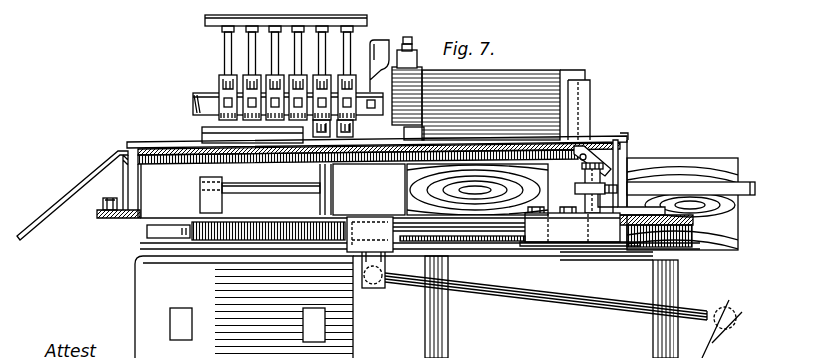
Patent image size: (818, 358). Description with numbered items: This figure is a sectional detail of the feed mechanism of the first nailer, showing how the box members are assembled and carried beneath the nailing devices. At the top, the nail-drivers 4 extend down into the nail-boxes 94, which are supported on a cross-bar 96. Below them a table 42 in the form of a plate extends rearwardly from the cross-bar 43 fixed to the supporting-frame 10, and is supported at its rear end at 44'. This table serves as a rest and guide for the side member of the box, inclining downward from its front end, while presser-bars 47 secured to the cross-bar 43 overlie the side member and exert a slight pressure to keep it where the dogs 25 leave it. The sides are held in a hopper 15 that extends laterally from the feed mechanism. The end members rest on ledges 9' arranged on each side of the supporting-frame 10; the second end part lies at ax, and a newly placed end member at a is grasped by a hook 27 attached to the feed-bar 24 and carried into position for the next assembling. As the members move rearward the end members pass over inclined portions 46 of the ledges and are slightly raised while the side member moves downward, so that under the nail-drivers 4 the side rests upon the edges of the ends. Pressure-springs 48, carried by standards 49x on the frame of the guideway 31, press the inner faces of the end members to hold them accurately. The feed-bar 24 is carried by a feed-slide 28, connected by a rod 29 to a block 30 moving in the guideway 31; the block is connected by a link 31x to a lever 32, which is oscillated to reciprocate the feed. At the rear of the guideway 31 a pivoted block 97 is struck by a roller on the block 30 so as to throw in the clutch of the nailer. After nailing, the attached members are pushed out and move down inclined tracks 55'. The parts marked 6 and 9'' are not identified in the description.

The nail-drivers 4 is at (230, 50).
The nail-boxes 94 is at (220, 88).
The cross-bar 96 is at (205, 96).
The table 42 is at (178, 148).
The hopper 15 is at (506, 105).
The presser-bars 47 is at (462, 140).
The hatched strip 6 is at (508, 140).
The rear end support 44' is at (356, 170).
The dogs 25 is at (598, 147).
The end member a is at (683, 163).
The hook 27 is at (752, 187).
The cross-bar 43 is at (628, 143).
The feed-bar 24 is at (582, 205).
The feed-slide 28 is at (580, 226).
The end part ax is at (477, 189).
The guideway 31 is at (334, 212).
The standards 49x is at (208, 198).
The pressure-springs 48 is at (315, 183).
The inclined tracks 55' is at (72, 195).
The pivoted block 97 is at (150, 232).
The inclined portions 46 is at (393, 288).
The block 30 is at (370, 234).
The link 31x is at (557, 302).
The rod 29 is at (515, 260).
The ledges 9' is at (606, 275).
The supporting-frame 10 is at (440, 344).
The lever 32 is at (727, 329).
The base 9'' is at (244, 307).